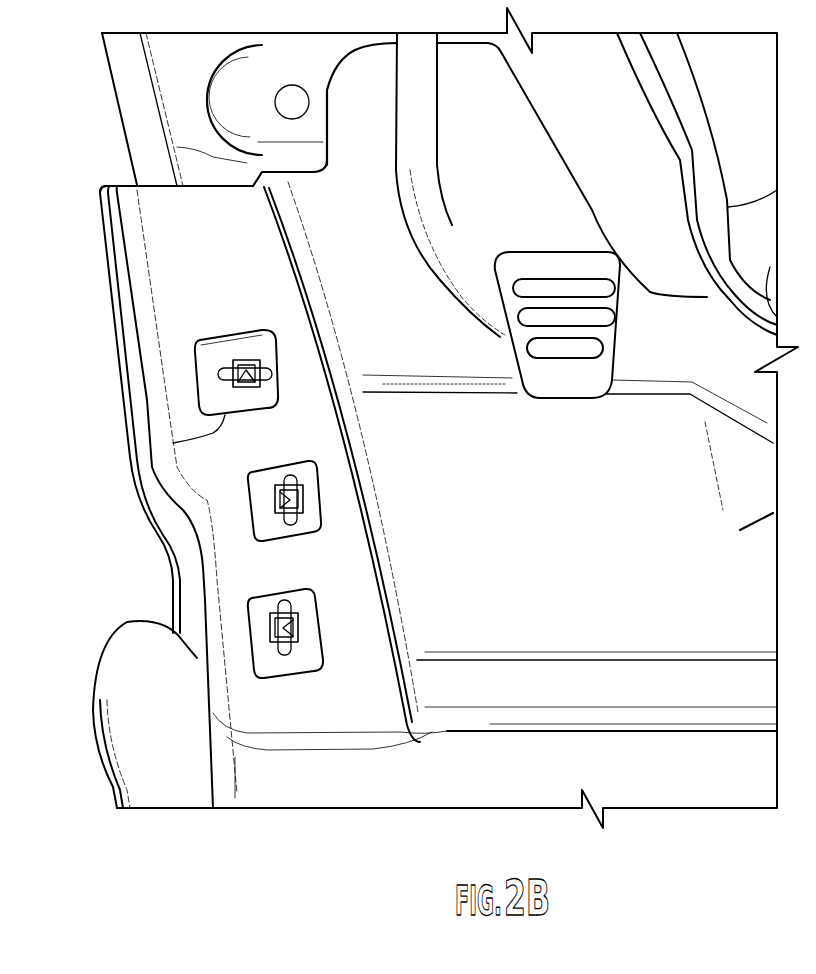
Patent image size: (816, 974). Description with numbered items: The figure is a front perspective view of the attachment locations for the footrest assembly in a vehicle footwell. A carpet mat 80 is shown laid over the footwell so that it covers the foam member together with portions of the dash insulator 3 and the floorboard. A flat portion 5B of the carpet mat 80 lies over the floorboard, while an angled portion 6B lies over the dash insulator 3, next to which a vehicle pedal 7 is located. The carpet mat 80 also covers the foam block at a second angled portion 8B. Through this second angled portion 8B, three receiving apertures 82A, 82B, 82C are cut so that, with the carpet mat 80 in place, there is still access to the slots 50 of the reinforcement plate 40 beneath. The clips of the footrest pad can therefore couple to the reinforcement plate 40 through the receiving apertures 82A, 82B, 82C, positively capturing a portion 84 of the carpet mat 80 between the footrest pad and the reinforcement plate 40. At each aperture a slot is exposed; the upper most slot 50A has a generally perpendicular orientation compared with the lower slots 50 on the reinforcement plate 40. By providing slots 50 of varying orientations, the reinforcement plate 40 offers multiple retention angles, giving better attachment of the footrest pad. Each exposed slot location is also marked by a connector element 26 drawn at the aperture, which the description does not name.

The dash insulator 3 is at (142, 125).
The pedal 7 is at (452, 225).
The carpet mat 80 is at (152, 296).
The second angled portion of the carpet mat 8B is at (233, 256).
The angled portion of the carpet mat 6B is at (572, 546).
The flat portion of the carpet mat 5B is at (541, 781).
The portion of the carpet mat 84 is at (220, 488).
The reinforcement plate 40 is at (203, 360).
The receiving aperture 82A is at (213, 427).
The receiving aperture 82B is at (260, 537).
The receiving aperture 82C is at (257, 675).
The upper most slot 50A is at (223, 363).
The slots 50 is at (285, 477).
The connector 26 is at (256, 362).